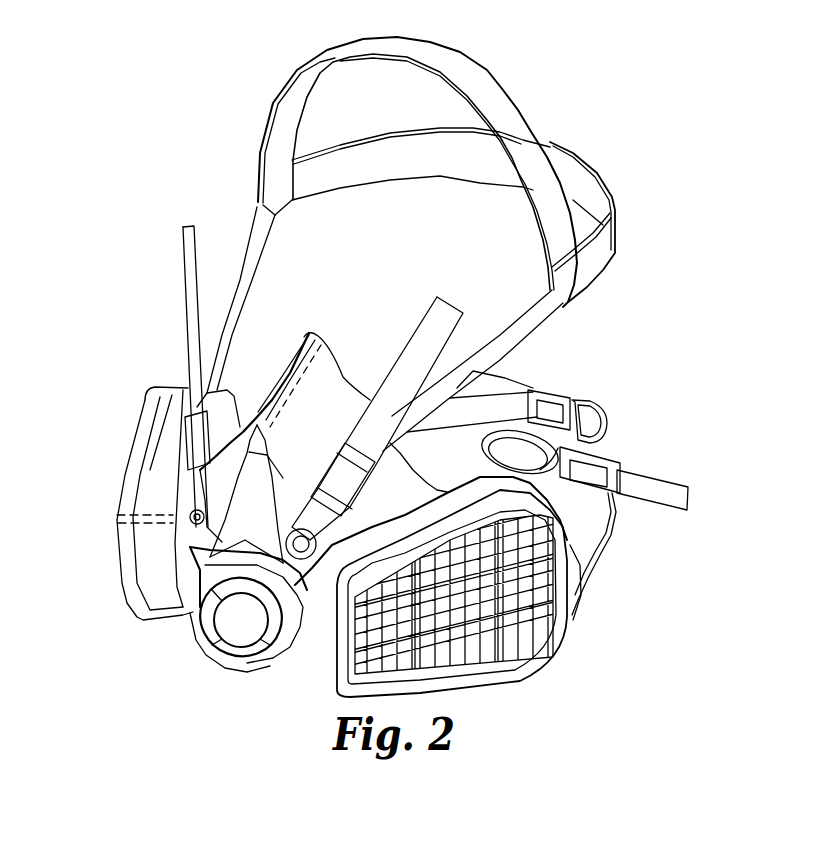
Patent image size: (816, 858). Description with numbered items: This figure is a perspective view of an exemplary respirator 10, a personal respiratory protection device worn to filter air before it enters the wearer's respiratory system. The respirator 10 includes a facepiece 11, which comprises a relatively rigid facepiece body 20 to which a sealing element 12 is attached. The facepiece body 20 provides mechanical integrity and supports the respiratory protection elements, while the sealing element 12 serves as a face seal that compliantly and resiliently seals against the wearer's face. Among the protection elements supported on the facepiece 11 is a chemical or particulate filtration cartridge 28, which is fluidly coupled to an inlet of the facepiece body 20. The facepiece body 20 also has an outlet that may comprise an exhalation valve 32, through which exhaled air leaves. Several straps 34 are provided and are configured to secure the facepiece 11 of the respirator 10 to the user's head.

The respirator 10 is at (142, 150).
The facepiece 11 is at (266, 368).
The sealing element 12 is at (340, 392).
The facepiece body 20 is at (227, 539).
The filtration cartridge 28 is at (560, 627).
The exhalation valve 32 is at (233, 657).
The straps 34 is at (262, 242).